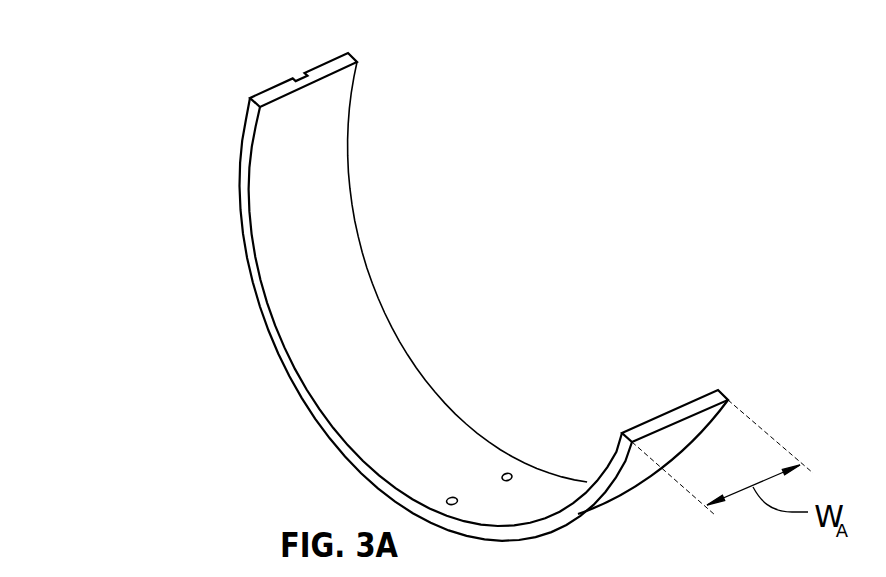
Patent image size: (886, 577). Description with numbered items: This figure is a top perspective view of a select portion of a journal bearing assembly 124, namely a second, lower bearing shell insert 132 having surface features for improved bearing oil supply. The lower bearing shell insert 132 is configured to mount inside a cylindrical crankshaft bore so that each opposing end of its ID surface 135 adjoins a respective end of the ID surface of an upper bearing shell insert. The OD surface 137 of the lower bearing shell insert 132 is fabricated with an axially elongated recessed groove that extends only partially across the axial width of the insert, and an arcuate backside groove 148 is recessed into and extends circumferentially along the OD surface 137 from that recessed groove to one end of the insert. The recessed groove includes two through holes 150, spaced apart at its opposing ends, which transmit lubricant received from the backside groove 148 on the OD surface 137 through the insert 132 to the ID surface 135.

The journal bearing assembly 124 is at (148, 148).
The lower bearing shell insert 132 is at (242, 205).
The ID surface 135 is at (337, 168).
The OD surface 137 is at (632, 478).
The arcuate backside groove 148 is at (300, 78).
The through holes 150 is at (452, 496).